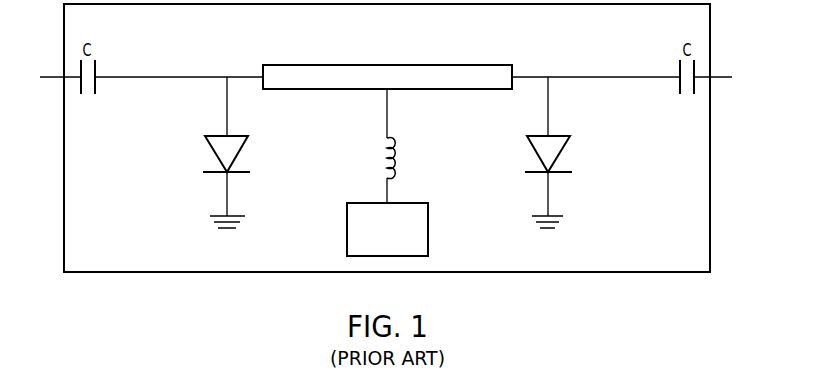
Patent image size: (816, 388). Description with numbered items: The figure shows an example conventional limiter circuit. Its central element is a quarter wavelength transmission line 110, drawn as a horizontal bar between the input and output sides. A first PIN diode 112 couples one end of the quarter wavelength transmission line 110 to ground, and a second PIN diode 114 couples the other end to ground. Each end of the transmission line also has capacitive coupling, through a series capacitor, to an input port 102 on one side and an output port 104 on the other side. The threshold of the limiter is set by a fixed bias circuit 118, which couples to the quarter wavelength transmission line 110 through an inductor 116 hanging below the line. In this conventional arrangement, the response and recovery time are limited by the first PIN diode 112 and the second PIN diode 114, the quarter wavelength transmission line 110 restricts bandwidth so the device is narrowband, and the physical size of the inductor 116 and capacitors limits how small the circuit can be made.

The input port 102 is at (52, 76).
The output port 104 is at (726, 76).
The quarter wavelength transmission line 110 is at (471, 65).
The first PIN diode 112 is at (212, 151).
The second PIN diode 114 is at (562, 148).
The inductor 116 is at (380, 162).
The fixed bias circuit 118 is at (430, 228).